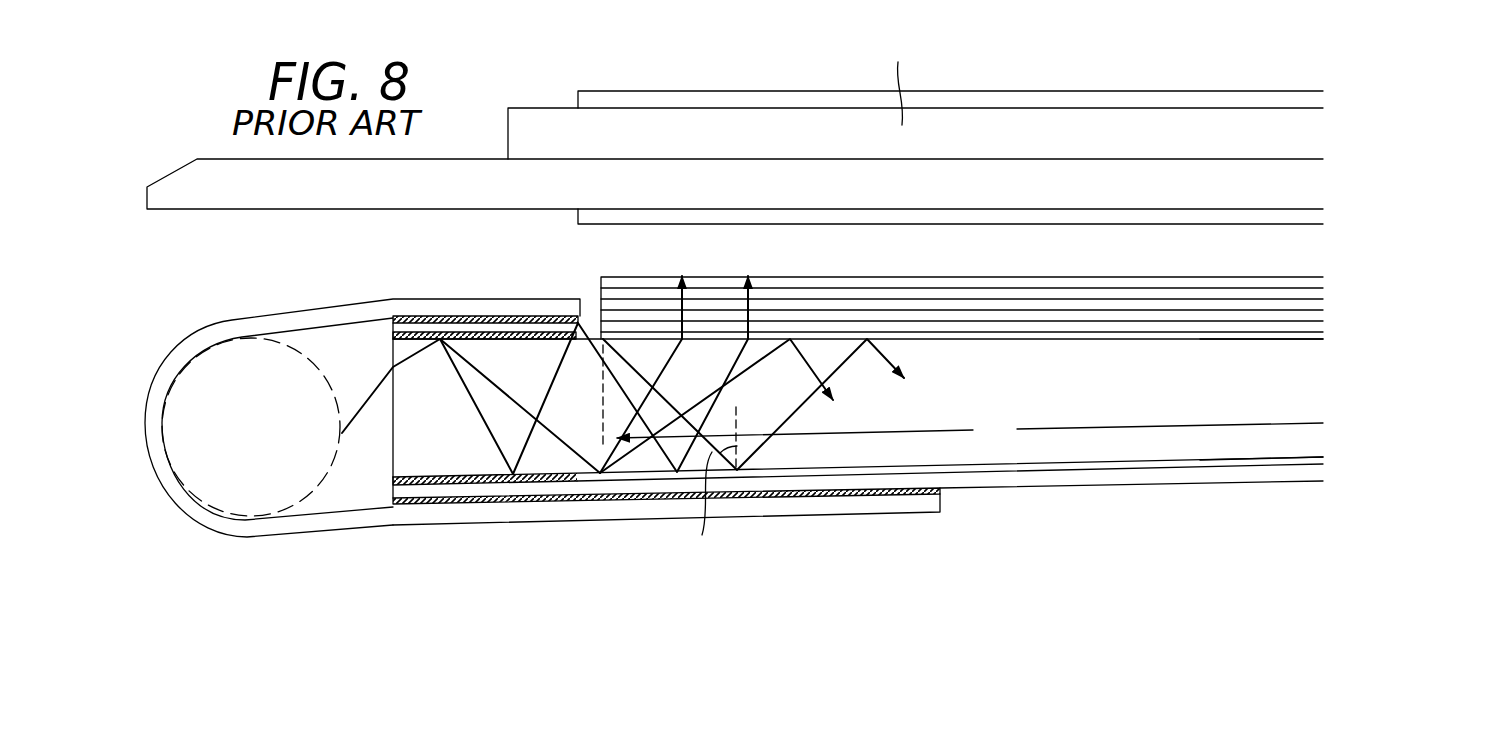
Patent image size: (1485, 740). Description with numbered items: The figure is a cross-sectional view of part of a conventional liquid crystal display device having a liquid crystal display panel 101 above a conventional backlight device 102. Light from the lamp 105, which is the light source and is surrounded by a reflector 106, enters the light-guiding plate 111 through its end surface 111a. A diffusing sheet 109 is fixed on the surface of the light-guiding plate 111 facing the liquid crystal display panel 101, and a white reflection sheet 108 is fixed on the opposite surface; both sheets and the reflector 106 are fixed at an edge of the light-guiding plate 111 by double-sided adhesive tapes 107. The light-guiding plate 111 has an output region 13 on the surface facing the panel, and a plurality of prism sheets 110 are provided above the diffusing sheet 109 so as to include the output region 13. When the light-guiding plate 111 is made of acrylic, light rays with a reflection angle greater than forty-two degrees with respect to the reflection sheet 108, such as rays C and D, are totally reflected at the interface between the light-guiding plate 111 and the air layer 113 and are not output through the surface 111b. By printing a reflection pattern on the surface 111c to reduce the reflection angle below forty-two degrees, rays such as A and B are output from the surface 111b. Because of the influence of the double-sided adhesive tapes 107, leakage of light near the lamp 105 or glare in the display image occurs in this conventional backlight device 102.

The liquid crystal display panel 101 is at (1333, 80).
The backlight device 102 is at (1403, 267).
The lamp 105 is at (228, 490).
The reflector 106 is at (333, 314).
The double-sided adhesive tapes 107 is at (462, 316).
The white reflection sheet 108 is at (1070, 480).
The diffusing sheet 109 is at (1185, 327).
The prism sheets 110 is at (1332, 273).
The light-guiding plate 111 is at (1168, 448).
The end surface 111a is at (391, 447).
The surface 111b is at (1265, 338).
The surface 111c is at (1292, 455).
The air layer 113 is at (998, 335).
The output region 13 is at (963, 397).